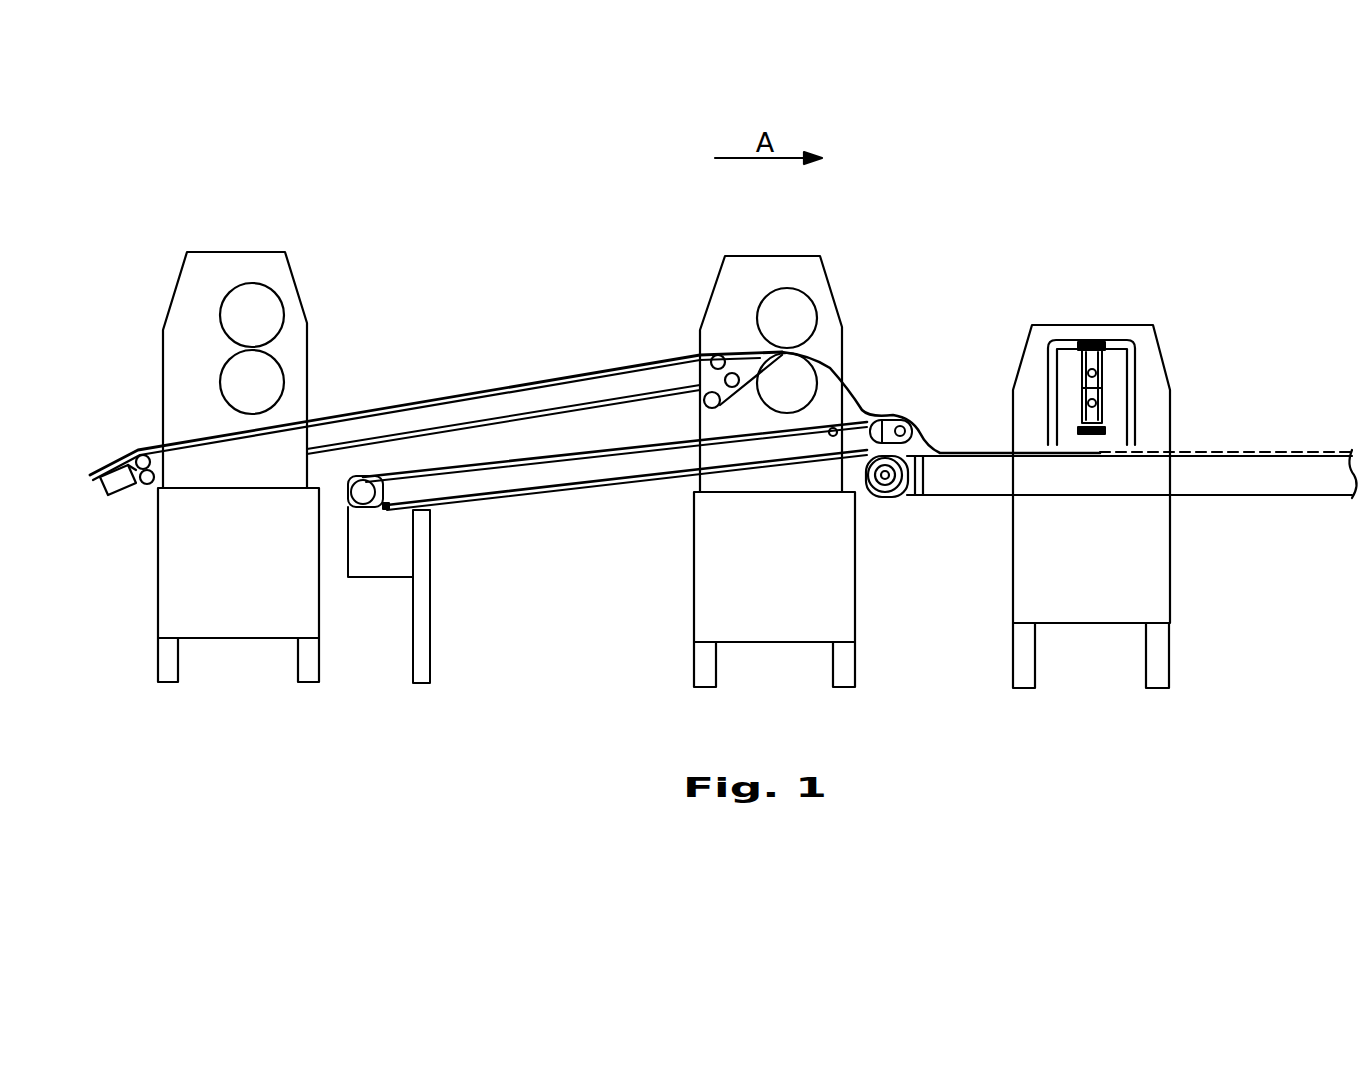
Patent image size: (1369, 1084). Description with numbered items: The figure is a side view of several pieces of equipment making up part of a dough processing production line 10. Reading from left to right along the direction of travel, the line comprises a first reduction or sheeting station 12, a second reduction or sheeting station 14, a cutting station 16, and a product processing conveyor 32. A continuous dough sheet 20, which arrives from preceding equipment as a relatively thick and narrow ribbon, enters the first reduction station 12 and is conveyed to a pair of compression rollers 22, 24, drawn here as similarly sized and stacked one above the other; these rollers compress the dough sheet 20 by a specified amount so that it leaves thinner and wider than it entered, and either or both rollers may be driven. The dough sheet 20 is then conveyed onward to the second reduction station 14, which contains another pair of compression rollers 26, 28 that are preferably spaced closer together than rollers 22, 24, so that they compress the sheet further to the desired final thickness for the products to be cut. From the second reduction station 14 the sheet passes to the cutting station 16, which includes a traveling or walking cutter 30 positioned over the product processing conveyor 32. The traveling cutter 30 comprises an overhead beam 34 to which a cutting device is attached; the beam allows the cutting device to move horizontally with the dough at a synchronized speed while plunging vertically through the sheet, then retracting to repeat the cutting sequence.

The dough processing production line 10 is at (980, 230).
The first reduction or sheeting station 12 is at (193, 280).
The second reduction or sheeting station 14 is at (743, 267).
The cutting station 16 is at (1040, 332).
The continuous dough sheet 20 is at (112, 460).
The compression roller 22 is at (275, 308).
The compression roller 24 is at (275, 380).
The compression roller 26 is at (810, 310).
The compression roller 28 is at (802, 377).
The traveling or walking cutter 30 is at (1088, 340).
The product processing conveyor 32 is at (973, 452).
The overhead beam 34 is at (1102, 343).